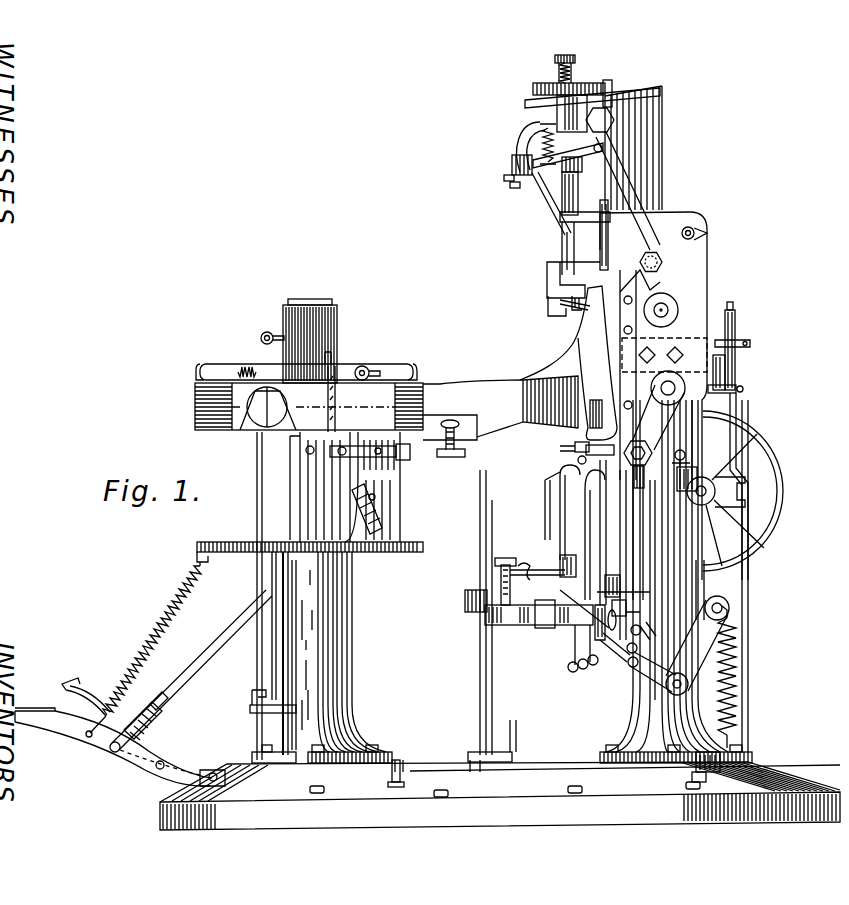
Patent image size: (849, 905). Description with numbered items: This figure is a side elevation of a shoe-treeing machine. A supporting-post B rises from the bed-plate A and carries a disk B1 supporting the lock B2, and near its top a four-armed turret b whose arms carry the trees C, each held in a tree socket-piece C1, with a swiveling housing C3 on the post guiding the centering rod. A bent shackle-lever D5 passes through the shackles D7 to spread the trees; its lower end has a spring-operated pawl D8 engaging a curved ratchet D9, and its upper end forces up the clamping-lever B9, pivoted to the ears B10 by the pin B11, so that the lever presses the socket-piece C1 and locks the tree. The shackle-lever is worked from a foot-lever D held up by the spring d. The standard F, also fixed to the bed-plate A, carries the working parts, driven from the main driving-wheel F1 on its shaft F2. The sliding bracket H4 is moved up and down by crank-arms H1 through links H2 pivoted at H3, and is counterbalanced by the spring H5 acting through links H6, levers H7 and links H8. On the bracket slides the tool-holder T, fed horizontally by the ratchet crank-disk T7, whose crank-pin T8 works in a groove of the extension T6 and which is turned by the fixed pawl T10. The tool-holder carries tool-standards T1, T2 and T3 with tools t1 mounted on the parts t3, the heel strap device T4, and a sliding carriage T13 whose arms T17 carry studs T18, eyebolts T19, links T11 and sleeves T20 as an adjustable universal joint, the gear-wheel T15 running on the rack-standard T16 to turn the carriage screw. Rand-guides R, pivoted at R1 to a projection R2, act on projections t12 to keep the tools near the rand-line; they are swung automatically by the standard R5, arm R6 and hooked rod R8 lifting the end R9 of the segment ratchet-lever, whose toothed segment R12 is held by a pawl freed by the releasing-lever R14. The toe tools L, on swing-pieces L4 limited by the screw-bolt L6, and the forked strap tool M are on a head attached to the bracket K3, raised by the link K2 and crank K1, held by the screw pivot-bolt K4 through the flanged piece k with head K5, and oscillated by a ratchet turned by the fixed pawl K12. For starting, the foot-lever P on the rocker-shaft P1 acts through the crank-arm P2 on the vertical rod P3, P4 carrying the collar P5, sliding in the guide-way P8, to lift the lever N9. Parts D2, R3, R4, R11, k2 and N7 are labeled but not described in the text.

The bed-plate A is at (500, 796).
The foot-lever P is at (400, 788).
The rocker-shaft P1 is at (520, 766).
The crank-arm P2 is at (752, 748).
The vertical rod P3 is at (750, 696).
The vertical rod P4 is at (737, 416).
The collar P5 is at (740, 386).
The guide-way P8 is at (741, 345).
The foot-lever D is at (210, 770).
The rod D2 is at (190, 680).
The bent lever D5 is at (333, 382).
The shackles D7 is at (367, 502).
The spring-operated pawl D8 is at (398, 456).
The curved ratchet D9 is at (88, 700).
The spring d is at (147, 644).
The supporting-post B is at (288, 648).
The disk B1 is at (238, 543).
The lock B2 is at (402, 506).
The clamping-lever B9 is at (240, 365).
The ears B10 is at (372, 364).
The pin B11 is at (366, 366).
The four-armed turret b is at (320, 487).
The trees C is at (430, 378).
The tree socket-piece C1 is at (195, 397).
The swiveling housing C3 is at (266, 331).
The guide-pieces R is at (584, 330).
The pivot R1 is at (626, 340).
The projection R2 is at (668, 432).
The hook R3 is at (546, 305).
The bracket R4 is at (548, 272).
The standard R5 is at (560, 246).
The arm R6 is at (582, 214).
The hooked rod R8 is at (630, 342).
The segment ratchet-lever end R9 is at (588, 308).
The rod R11 is at (575, 254).
The segment end R12 is at (680, 306).
The releasing-lever R14 is at (586, 298).
The crank K1 is at (708, 242).
The link K2 is at (640, 186).
The bracket K3 is at (613, 90).
The screw pivot-bolt K4 is at (574, 82).
The head of screw-guide flanged piece K5 is at (590, 92).
The fixed pawl K12 is at (660, 258).
The screw-guide flanged piece k is at (528, 138).
The screw k2 is at (557, 72).
The tool-shanks L is at (545, 196).
The swing-piece L4 is at (512, 160).
The screw-bolt L6 is at (531, 140).
The forked piece M is at (560, 198).
The rod N7 is at (737, 325).
The lever N9 is at (738, 375).
The standard F is at (690, 708).
The main driving-wheel F1 is at (782, 493).
The shaft F2 is at (688, 492).
The crank-arms H1 is at (668, 410).
The links H2 is at (640, 553).
The pivot H3 is at (626, 668).
The sliding bracket H4 is at (614, 650).
The spring H5 is at (740, 664).
The links H6 is at (730, 612).
The levers H7 is at (698, 622).
The links H8 is at (652, 660).
The tool-holder T is at (502, 626).
The tool-standards T1 is at (626, 500).
The tool-standards T2 is at (608, 586).
The tool-standards T3 is at (562, 492).
The heel-treeing device T4 is at (560, 520).
The adjustable extension T6 is at (588, 640).
The ratchet crank-disk T7 is at (628, 606).
The crank-pin T8 is at (618, 618).
The fixed pawl T10 is at (594, 620).
The links T11 is at (532, 561).
The sliding carriage T13 is at (542, 628).
The gear-wheel T15 is at (474, 612).
The rack-standard T16 is at (480, 560).
The projecting arms T17 is at (482, 640).
The studs T18 is at (500, 580).
The eyebolts T19 is at (530, 569).
The sleeves T20 is at (578, 562).
The tool t1 is at (575, 448).
The extension part t3 is at (572, 672).
The projections t12 is at (578, 460).